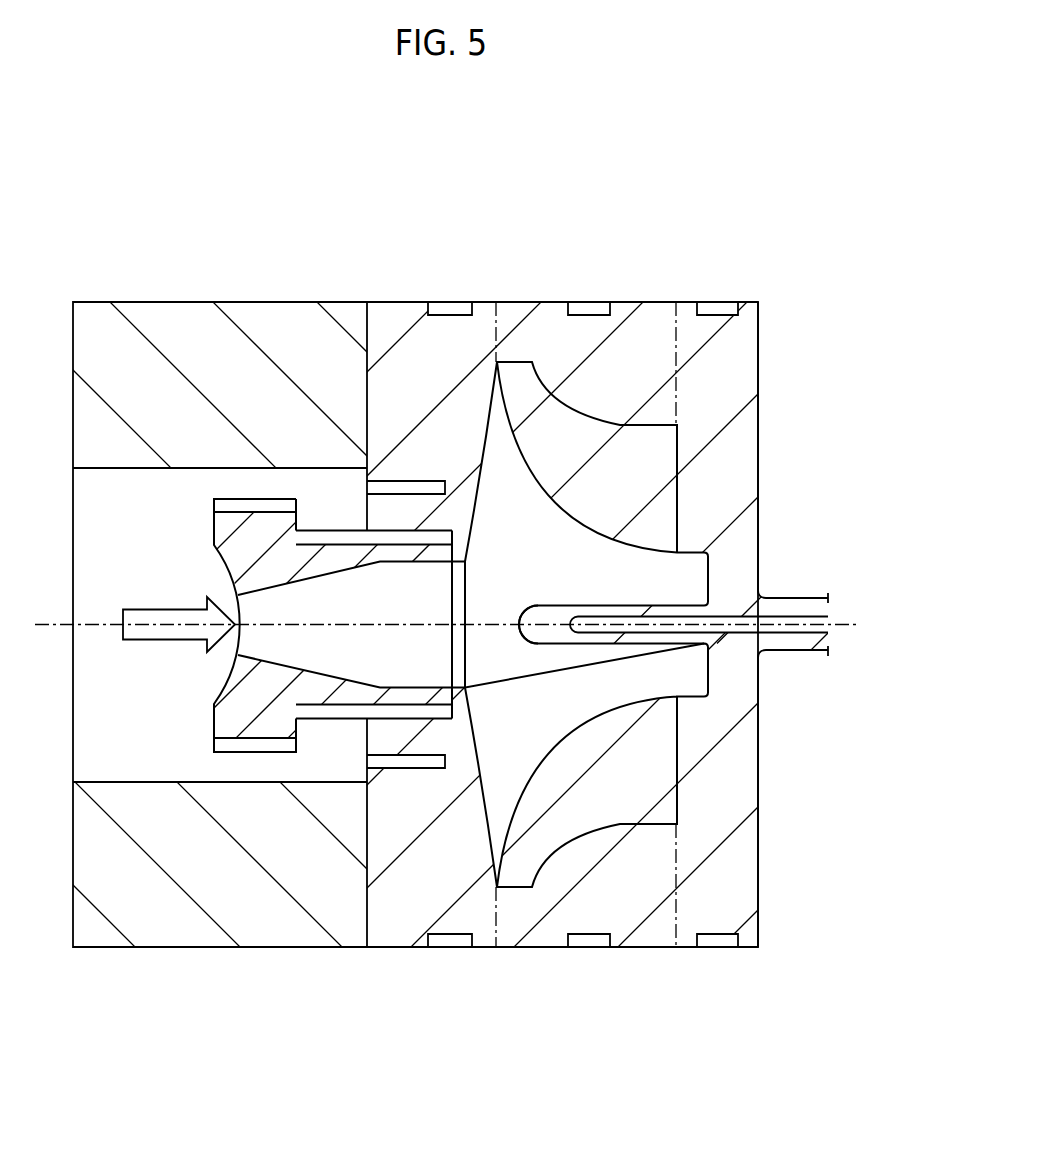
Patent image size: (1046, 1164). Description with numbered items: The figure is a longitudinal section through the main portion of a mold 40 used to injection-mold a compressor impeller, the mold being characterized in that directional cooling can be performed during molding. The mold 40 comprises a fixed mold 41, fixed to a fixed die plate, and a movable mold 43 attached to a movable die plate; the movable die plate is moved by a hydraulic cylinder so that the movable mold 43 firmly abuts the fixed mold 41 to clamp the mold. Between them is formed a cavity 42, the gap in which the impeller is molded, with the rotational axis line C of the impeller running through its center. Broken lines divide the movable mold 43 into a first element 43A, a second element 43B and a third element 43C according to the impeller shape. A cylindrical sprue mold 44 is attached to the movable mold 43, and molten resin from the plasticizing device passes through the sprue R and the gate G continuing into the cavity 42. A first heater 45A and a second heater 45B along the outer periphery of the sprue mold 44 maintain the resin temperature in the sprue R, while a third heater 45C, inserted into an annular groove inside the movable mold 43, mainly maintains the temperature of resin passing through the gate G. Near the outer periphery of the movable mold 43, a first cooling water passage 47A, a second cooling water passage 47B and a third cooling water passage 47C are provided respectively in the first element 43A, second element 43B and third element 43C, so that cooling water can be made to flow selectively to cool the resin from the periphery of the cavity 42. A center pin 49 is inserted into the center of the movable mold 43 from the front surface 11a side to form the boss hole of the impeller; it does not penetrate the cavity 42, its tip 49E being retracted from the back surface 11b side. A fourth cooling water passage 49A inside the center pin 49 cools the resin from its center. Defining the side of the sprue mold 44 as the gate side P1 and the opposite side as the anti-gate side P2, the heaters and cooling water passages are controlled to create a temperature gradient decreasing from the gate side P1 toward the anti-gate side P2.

The mold 40 is at (609, 203).
The fixed mold 41 is at (215, 300).
The cavity 42 is at (532, 561).
The movable mold 43 is at (520, 298).
The first element 43A is at (385, 300).
The second element 43B is at (556, 302).
The third element 43C is at (690, 300).
The sprue mold 44 is at (318, 530).
The first heater 45A is at (245, 752).
The second heater 45B is at (343, 719).
The third heater 45C is at (410, 768).
The first cooling water passage 47A is at (447, 949).
The second cooling water passage 47B is at (587, 949).
The third cooling water passage 47C is at (712, 949).
The center pin 49 is at (667, 605).
The fourth cooling water passage 49A is at (788, 621).
The tip 49E is at (537, 624).
The front surface 11a is at (565, 515).
The back surface 11b is at (478, 493).
The sprue R is at (351, 664).
The rotational axis line C is at (839, 621).
The gate G is at (457, 672).
The gate side P1 is at (467, 625).
The anti-gate side P2 is at (763, 617).